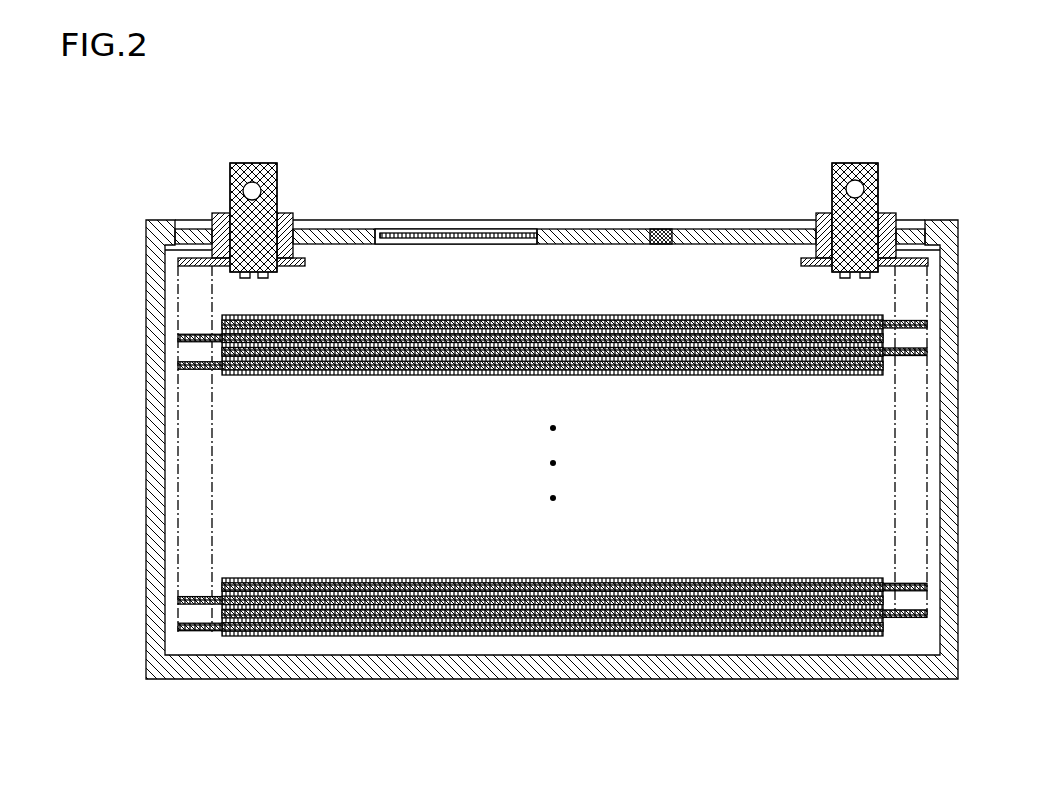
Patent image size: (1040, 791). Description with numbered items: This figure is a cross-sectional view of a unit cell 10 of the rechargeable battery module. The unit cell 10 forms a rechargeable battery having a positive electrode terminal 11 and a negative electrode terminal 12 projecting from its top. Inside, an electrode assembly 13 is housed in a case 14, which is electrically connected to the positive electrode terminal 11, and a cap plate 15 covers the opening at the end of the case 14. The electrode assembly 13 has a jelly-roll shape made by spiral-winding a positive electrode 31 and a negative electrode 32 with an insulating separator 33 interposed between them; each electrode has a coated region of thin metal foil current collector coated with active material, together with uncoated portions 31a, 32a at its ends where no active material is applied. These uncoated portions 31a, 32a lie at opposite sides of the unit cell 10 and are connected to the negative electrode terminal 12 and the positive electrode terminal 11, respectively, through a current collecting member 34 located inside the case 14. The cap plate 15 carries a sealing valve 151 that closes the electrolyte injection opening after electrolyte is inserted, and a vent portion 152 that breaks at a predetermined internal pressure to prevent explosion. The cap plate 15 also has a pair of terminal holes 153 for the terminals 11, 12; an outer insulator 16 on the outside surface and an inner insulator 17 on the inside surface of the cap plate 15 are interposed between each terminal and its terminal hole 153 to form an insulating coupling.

The unit cell 10 is at (566, 80).
The positive electrode terminal 11 is at (860, 163).
The negative electrode terminal 12 is at (258, 163).
The electrode assembly 13 is at (553, 528).
The case 14 is at (146, 570).
The cap plate 15 is at (596, 229).
The sealing valve 151 is at (660, 229).
The vent portion 152 is at (504, 229).
The terminal hole 153 is at (292, 213).
The outer insulator 16 is at (218, 213).
The inner insulator 17 is at (168, 252).
The positive electrode 31 is at (367, 637).
The uncoated portion 31a is at (201, 632).
The negative electrode 32 is at (662, 637).
The uncoated portion 32a is at (912, 618).
The insulating separator 33 is at (508, 637).
The current collecting member 34 is at (180, 263).